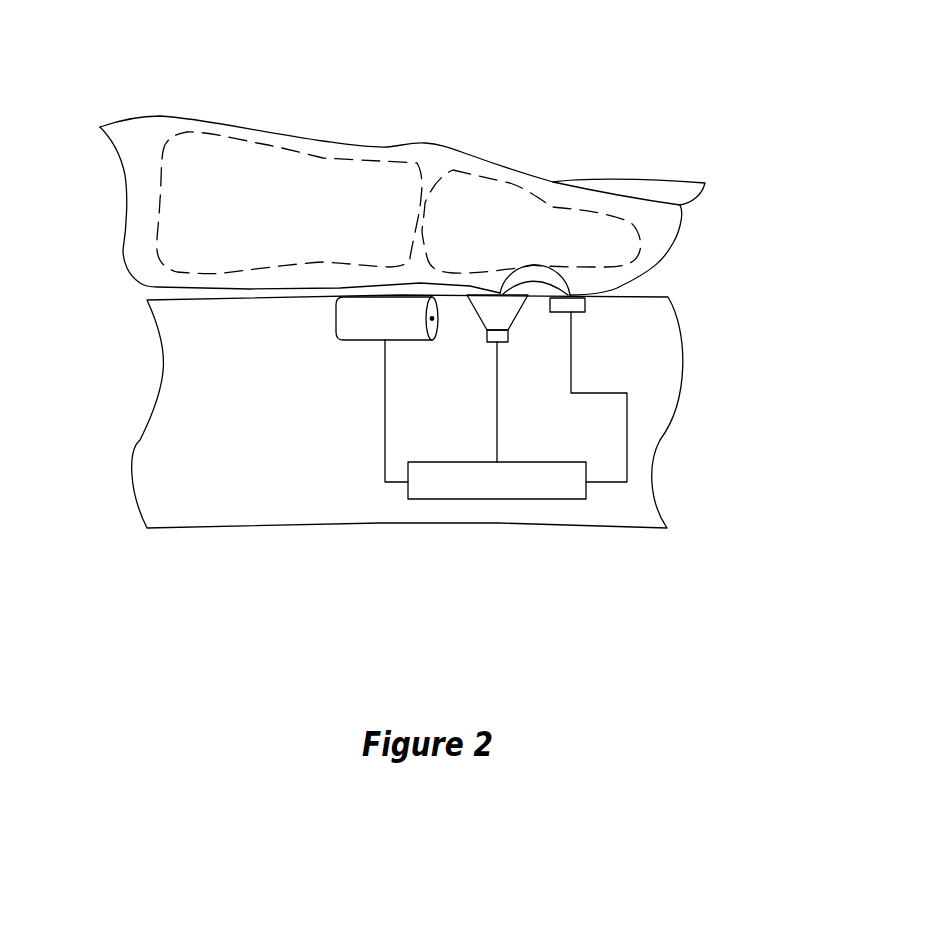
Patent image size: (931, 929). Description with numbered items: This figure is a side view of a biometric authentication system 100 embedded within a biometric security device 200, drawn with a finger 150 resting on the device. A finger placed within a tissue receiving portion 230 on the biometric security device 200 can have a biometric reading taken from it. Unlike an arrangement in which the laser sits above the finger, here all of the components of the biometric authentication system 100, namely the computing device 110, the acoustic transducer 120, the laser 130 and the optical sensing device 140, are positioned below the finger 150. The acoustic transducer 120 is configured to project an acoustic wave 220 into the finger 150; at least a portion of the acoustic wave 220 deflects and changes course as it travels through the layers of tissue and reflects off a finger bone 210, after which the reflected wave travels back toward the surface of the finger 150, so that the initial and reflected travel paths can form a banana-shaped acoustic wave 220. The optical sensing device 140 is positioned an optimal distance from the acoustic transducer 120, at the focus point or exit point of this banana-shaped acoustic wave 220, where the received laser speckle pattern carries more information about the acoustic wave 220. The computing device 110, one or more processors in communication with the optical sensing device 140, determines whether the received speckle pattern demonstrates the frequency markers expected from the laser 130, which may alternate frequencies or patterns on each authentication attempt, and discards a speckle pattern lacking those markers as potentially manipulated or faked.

The biometric authentication system 100 is at (422, 295).
The computing device 110 is at (497, 480).
The acoustic transducer 120 is at (487, 337).
The laser 130 is at (350, 332).
The optical sensing device 140 is at (585, 313).
The finger 150 is at (355, 140).
The biometric security device 200 is at (607, 523).
The finger bone 210 is at (507, 193).
The acoustic wave 220 is at (540, 270).
The tissue receiving portion 230 is at (500, 293).